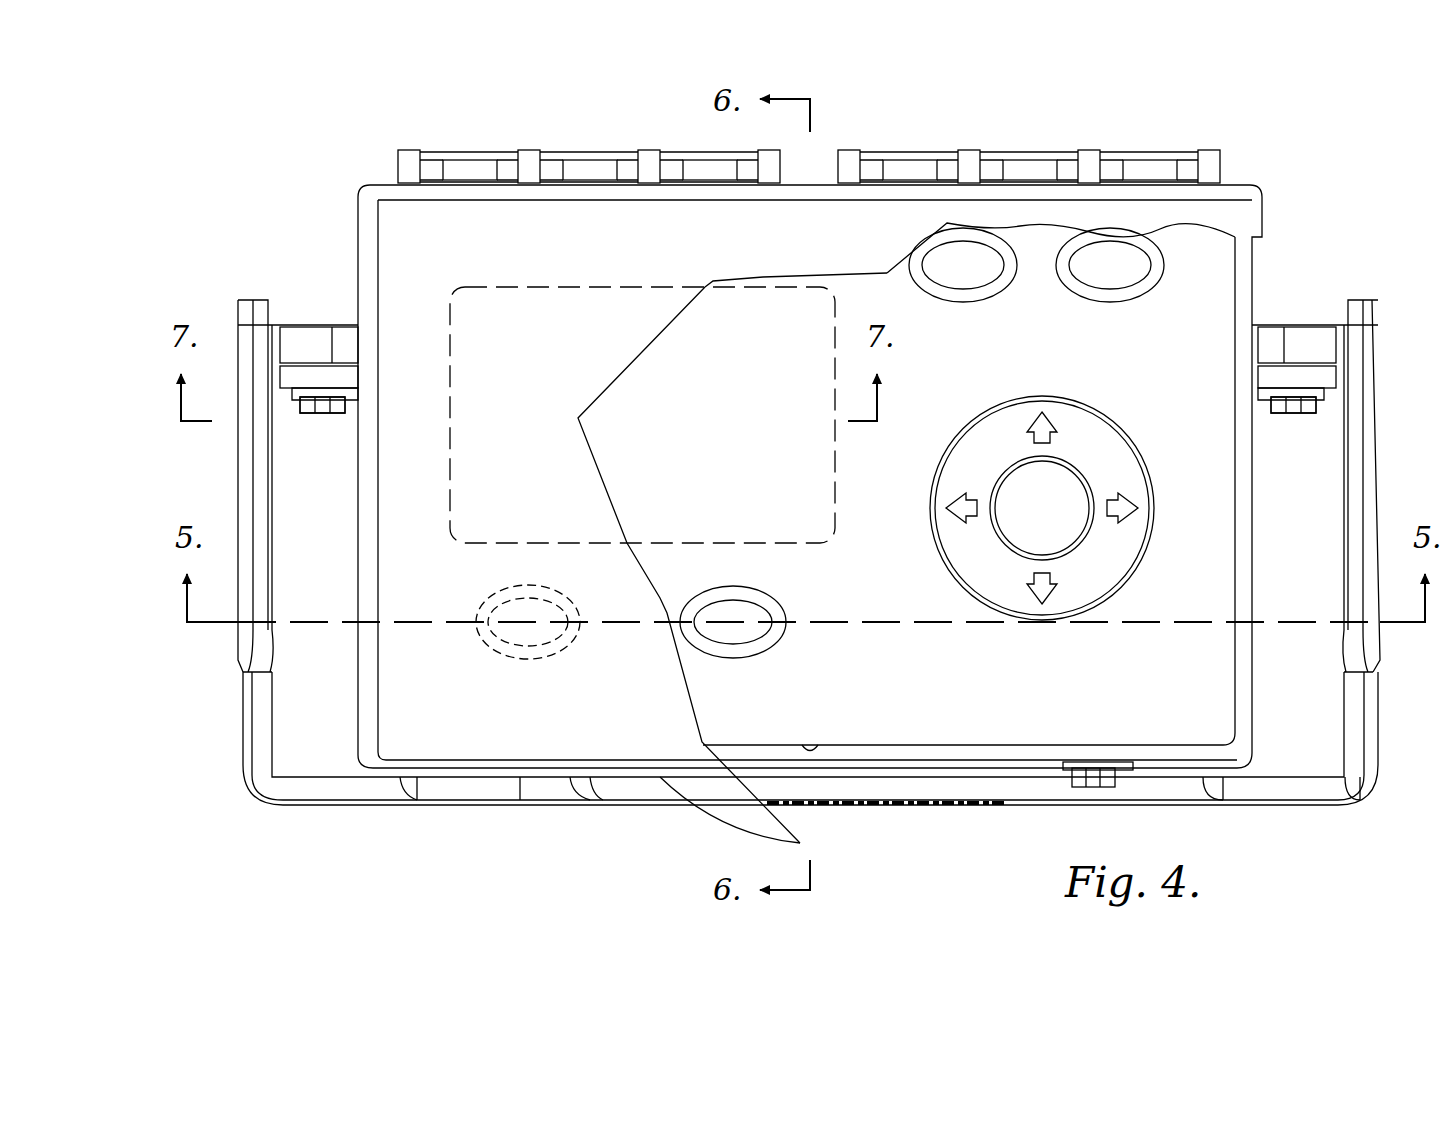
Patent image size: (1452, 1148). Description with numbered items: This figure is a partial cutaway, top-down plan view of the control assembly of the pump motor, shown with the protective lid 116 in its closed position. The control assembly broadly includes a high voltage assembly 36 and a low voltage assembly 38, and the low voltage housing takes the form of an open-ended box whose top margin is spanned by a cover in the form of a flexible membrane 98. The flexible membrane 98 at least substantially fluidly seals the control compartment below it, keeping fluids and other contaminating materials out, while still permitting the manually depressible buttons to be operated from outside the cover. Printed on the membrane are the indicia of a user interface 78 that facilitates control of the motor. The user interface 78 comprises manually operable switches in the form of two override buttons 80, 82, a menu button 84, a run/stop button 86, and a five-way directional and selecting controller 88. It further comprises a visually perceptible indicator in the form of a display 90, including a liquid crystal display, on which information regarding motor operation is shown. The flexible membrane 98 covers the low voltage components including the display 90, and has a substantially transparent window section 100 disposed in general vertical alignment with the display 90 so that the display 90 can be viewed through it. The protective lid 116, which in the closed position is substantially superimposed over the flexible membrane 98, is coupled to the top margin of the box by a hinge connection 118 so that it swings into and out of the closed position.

The high voltage assembly 36 is at (228, 300).
The low voltage assembly 38 is at (345, 185).
The user interface 78 is at (1270, 280).
The override button 80 is at (558, 632).
The override button 82 is at (768, 632).
The menu button 84 is at (995, 285).
The run/stop button 86 is at (1150, 270).
The five-way directional and selecting controller 88 is at (1127, 437).
The display 90 is at (845, 493).
The flexible membrane 98 is at (1128, 697).
The window section 100 is at (757, 330).
The protective lid 116 is at (407, 737).
The hinge connection 118 is at (1225, 163).